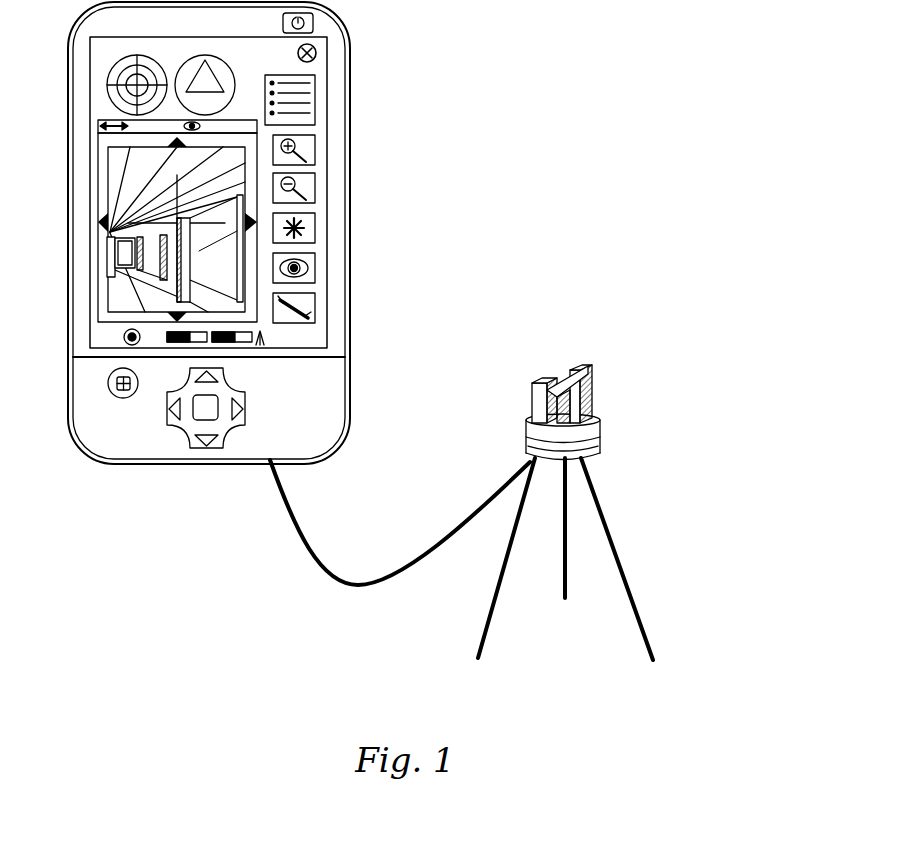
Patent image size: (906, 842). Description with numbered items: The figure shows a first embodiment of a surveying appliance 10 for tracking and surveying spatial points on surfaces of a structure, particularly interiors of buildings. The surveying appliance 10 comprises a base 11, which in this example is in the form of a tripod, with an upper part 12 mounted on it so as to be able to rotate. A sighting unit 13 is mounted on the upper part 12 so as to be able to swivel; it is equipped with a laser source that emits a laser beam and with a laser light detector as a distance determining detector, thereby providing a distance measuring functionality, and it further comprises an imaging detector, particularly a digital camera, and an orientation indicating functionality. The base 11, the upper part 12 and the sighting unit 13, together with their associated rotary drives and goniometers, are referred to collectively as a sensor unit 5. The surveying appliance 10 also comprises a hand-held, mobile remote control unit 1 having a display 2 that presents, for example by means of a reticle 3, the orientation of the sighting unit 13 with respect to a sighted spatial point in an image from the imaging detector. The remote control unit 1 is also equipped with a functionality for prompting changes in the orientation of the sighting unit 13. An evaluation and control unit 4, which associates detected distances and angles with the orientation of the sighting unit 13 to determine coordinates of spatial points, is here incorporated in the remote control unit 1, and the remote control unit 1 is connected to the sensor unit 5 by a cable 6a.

The remote control unit 1 is at (285, 233).
The display 2 is at (156, 308).
The reticle 3 is at (295, 311).
The evaluation and control unit 4 is at (176, 459).
The sensor unit 5 is at (585, 474).
The cable 6a is at (328, 535).
The surveying appliance 10 is at (702, 55).
The base 11 is at (616, 446).
The upper part 12 is at (605, 389).
The sighting unit 13 is at (526, 365).